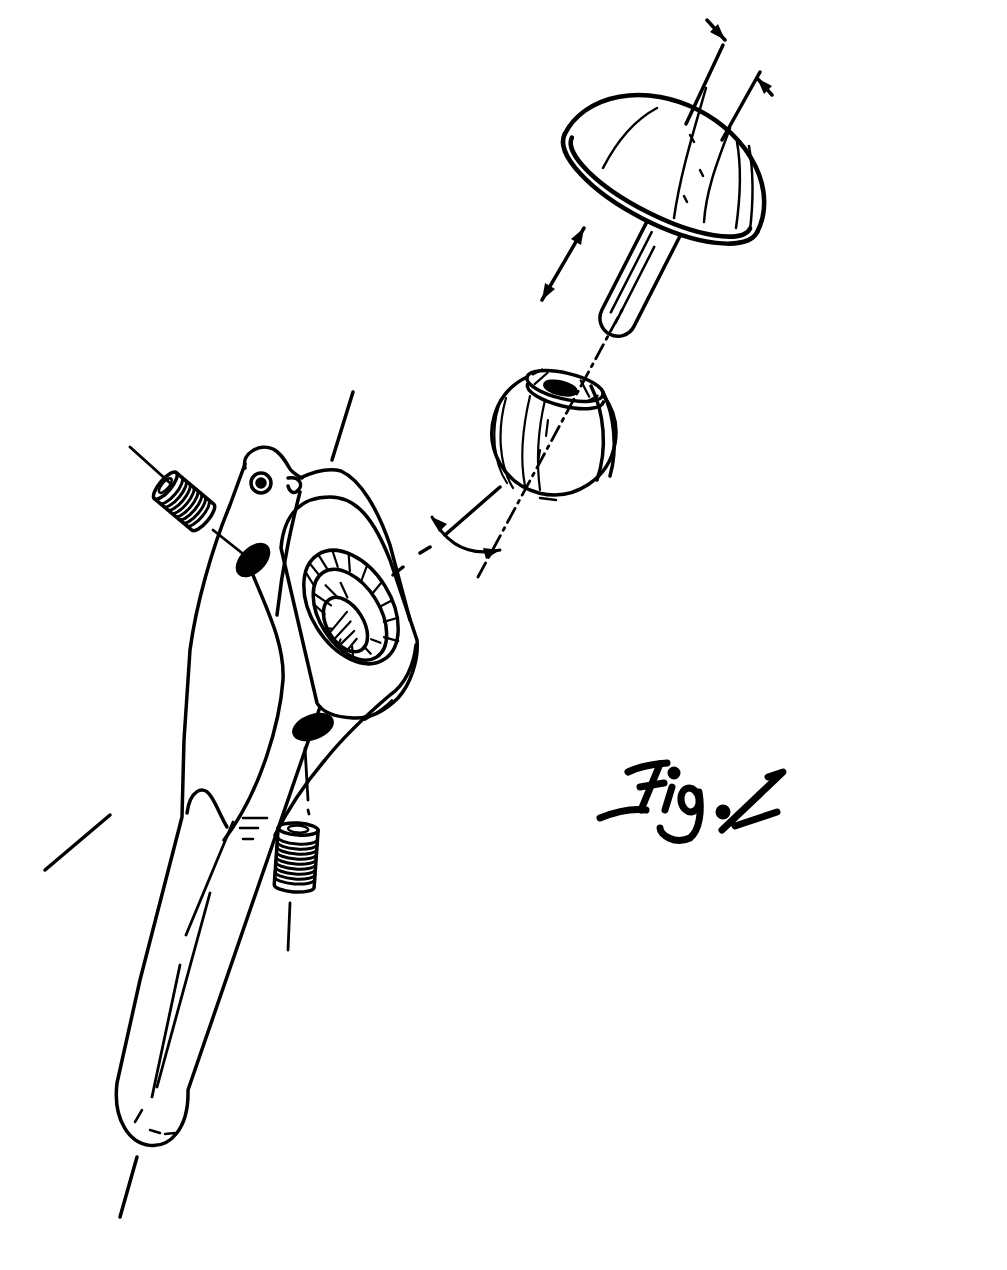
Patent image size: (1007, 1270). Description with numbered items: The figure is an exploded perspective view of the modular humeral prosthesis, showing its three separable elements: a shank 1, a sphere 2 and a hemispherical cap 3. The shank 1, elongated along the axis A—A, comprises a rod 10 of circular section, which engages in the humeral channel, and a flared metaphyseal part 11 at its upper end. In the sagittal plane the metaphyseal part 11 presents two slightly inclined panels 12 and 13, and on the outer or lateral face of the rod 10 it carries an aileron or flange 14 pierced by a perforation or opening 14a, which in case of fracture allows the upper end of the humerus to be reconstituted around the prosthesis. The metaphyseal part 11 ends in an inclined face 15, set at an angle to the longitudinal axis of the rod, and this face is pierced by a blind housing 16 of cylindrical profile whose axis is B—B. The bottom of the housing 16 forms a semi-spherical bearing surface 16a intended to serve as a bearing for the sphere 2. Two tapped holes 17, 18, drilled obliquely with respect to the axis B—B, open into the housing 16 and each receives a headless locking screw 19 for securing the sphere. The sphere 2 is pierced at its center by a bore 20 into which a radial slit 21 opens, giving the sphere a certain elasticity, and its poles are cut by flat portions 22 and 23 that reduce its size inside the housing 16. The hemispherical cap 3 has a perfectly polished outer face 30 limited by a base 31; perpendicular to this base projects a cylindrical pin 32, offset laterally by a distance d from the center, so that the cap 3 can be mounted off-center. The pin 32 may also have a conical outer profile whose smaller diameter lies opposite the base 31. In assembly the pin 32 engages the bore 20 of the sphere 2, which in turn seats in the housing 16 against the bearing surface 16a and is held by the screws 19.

The shank 1 is at (125, 813).
The rod 10 is at (190, 1057).
The metaphyseal part 11 is at (260, 612).
The inclined panel 12 is at (230, 687).
The inclined panel 13 is at (428, 632).
The aileron or flange 14 is at (287, 452).
The perforation or opening 14a is at (251, 468).
The inclined face 15 is at (395, 687).
The blind housing 16 is at (356, 563).
The semi-spherical bearing surface 16a is at (412, 667).
The tapped hole 17 is at (240, 565).
The tapped hole 18 is at (330, 725).
The headless locking screw 19 is at (172, 515).
The sphere 2 is at (650, 446).
The bore 20 is at (537, 370).
The radial slit 21 is at (612, 481).
The flat portion 22 is at (610, 395).
The flat portion 23 is at (533, 508).
The hemispherical cap 3 is at (538, 169).
The outer face 30 is at (620, 115).
The base 31 is at (700, 255).
The cylindrical pin 32 is at (643, 298).